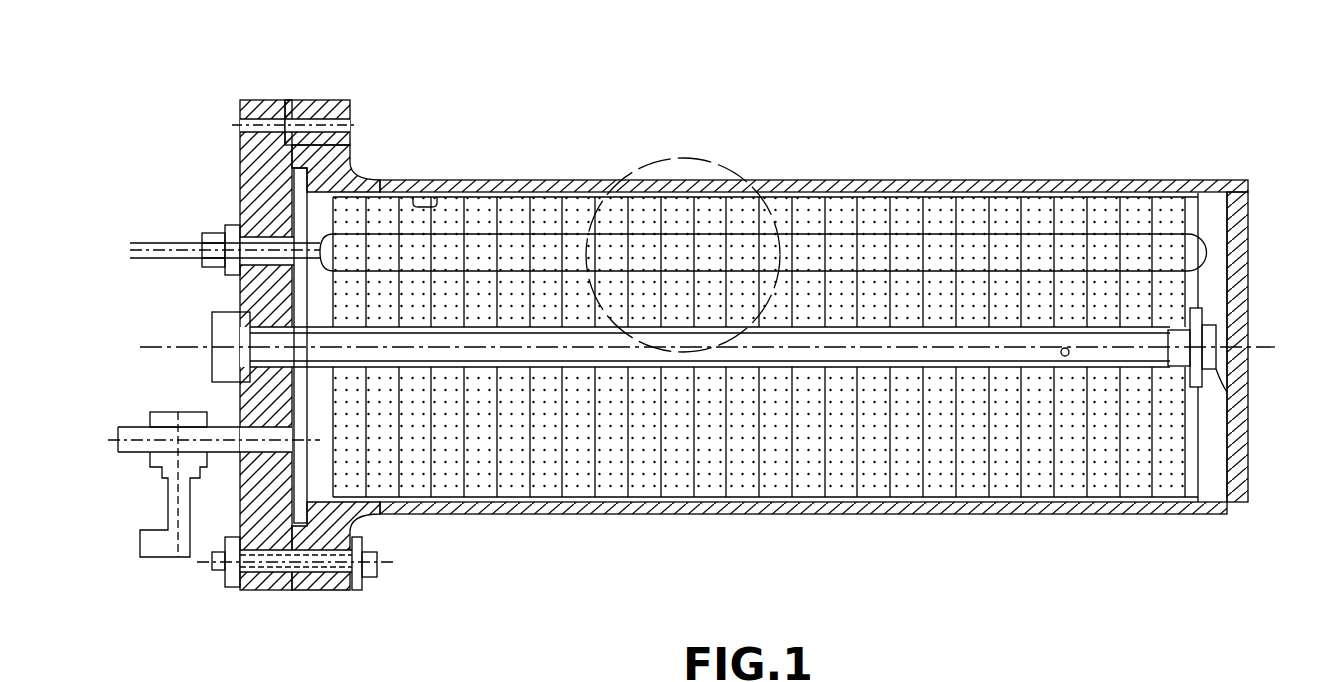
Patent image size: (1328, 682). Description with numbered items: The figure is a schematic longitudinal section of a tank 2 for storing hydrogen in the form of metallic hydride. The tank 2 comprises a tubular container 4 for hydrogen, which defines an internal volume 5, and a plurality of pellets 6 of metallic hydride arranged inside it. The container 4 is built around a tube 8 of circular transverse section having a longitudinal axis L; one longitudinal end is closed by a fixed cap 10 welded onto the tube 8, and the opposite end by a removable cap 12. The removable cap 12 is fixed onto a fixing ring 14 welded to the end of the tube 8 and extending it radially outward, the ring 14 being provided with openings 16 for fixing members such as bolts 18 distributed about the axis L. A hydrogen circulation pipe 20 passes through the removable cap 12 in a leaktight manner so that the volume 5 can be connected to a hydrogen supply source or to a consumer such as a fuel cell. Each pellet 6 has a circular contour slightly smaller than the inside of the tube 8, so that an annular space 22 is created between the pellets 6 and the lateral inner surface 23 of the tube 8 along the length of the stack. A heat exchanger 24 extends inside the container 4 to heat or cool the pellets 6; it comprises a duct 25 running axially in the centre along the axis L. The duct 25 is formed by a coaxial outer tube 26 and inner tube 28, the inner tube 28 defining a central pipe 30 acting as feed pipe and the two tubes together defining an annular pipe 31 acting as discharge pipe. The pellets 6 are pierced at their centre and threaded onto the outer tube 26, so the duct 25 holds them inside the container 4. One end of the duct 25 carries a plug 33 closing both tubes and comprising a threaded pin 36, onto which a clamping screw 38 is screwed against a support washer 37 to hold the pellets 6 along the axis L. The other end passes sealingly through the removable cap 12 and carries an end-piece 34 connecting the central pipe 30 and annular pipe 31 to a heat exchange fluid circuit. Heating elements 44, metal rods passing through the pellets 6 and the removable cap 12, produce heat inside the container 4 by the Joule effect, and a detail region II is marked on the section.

The tank 2 is at (914, 92).
The container 4 is at (744, 370).
The internal volume 5 is at (322, 215).
The pellets 6 is at (1012, 210).
The tube 8 is at (846, 190).
The fixed cap 10 is at (1240, 244).
The removable cap 12 is at (232, 190).
The fixing ring 14 is at (352, 104).
The openings 16 is at (316, 126).
The bolts 18 is at (378, 577).
The hydrogen circulation pipe 20 is at (130, 420).
The annular space 22 is at (508, 196).
The lateral inner surface 23 is at (436, 205).
The heat exchanger 24 is at (962, 570).
The duct 25 is at (910, 382).
The outer tube 26 is at (1005, 368).
The inner tube 28 is at (1065, 357).
The central pipe 30 is at (710, 443).
The annular pipe 31 is at (612, 370).
The plug 33 is at (1182, 372).
The end-piece 34 is at (214, 332).
The threaded pin 36 is at (1215, 342).
The support washer 37 is at (1198, 315).
The clamping screw 38 is at (1227, 392).
The heating elements 44 is at (1102, 238).
The longitudinal axis L is at (1275, 347).
The detail II is at (728, 166).